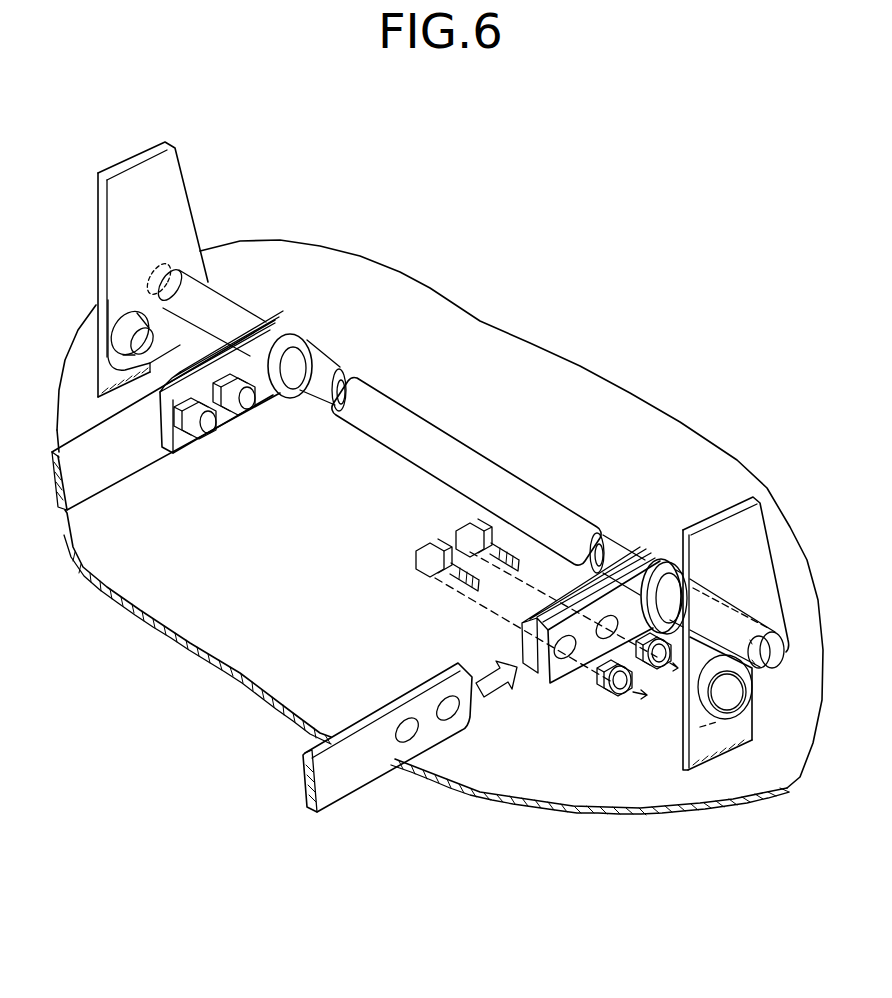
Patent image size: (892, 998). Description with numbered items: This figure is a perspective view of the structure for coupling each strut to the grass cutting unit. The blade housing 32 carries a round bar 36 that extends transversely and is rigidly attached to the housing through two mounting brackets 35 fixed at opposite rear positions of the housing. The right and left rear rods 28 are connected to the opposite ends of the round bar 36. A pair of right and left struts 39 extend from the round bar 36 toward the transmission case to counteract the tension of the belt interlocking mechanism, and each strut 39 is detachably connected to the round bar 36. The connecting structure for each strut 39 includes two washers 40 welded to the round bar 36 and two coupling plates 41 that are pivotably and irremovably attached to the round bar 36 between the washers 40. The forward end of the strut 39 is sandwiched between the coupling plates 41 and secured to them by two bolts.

The rear rods 28 is at (175, 190).
The blade housing 32 is at (602, 390).
The mounting brackets 35 is at (90, 337).
The round bar 36 is at (430, 437).
The struts 39 is at (125, 470).
The washers 40 is at (323, 340).
The coupling plates 41 is at (208, 352).